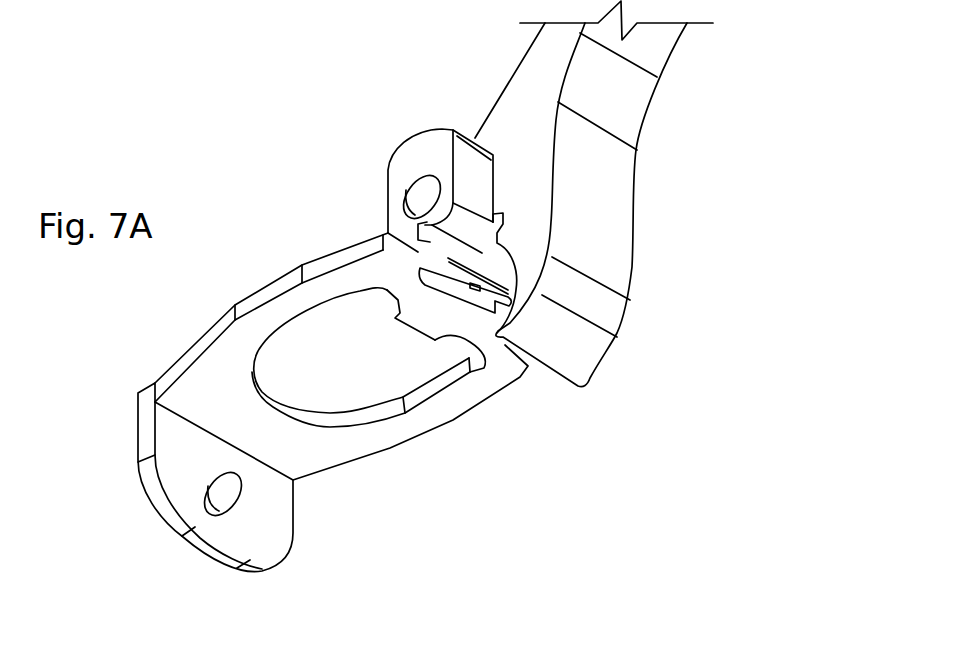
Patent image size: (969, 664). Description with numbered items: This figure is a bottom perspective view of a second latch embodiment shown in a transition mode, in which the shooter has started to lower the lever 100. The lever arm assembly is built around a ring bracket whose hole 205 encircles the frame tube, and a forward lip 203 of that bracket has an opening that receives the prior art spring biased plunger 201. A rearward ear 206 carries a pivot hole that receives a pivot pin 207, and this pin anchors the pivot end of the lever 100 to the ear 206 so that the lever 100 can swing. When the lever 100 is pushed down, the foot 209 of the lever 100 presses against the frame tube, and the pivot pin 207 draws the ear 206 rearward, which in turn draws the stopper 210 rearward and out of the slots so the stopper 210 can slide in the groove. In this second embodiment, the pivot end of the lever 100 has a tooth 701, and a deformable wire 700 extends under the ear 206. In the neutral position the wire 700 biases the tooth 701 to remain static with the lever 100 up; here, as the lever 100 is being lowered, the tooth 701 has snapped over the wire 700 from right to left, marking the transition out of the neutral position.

The lever 100 is at (633, 90).
The spring biased plunger 201 is at (220, 502).
The forward lip 203 is at (278, 507).
The hole 205 is at (370, 383).
The rearward ear 206 is at (403, 160).
The pivot pin 207 is at (420, 190).
The foot 209 is at (503, 325).
The stopper 210 is at (508, 328).
The deformable wire 700 is at (428, 240).
The tooth 701 is at (440, 273).